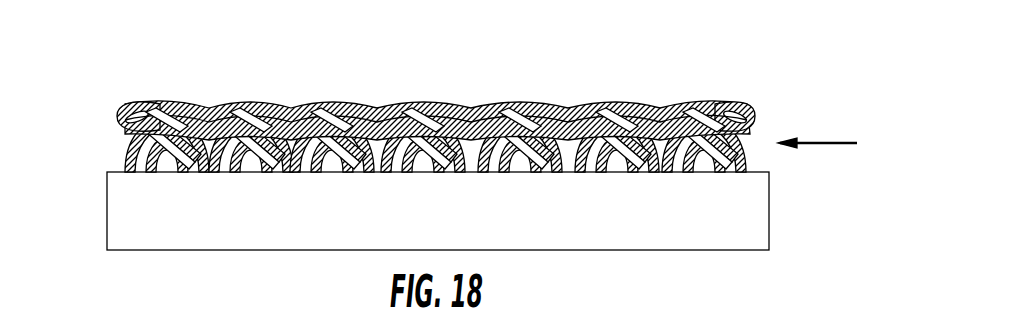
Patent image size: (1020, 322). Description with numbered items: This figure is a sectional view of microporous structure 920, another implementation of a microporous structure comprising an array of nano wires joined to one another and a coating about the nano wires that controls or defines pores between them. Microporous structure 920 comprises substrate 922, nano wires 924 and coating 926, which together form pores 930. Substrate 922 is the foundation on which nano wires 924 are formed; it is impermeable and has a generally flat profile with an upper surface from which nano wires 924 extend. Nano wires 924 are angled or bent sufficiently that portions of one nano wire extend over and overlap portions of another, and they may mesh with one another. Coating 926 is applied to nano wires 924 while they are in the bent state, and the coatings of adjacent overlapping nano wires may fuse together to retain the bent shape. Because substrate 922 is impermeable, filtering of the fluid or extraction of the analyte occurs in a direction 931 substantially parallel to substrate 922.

The microporous structure 920 is at (420, 96).
The substrate 922 is at (107, 220).
The nano wires 924 is at (305, 110).
The coating 926 is at (493, 102).
The pores 930 is at (580, 140).
The direction 931 is at (820, 143).